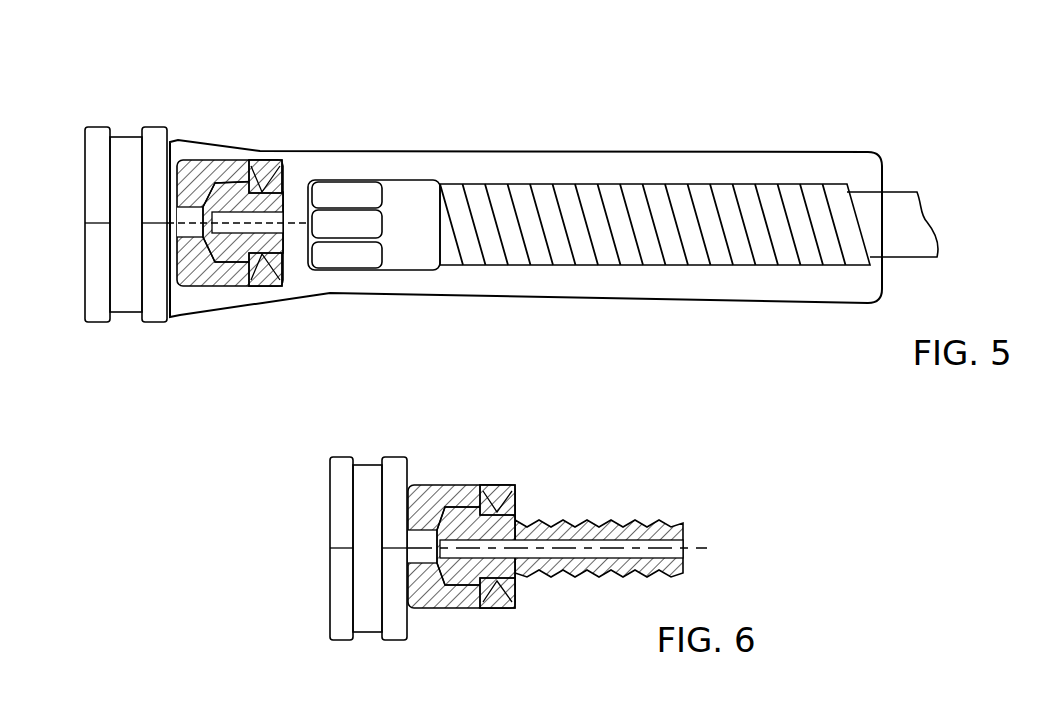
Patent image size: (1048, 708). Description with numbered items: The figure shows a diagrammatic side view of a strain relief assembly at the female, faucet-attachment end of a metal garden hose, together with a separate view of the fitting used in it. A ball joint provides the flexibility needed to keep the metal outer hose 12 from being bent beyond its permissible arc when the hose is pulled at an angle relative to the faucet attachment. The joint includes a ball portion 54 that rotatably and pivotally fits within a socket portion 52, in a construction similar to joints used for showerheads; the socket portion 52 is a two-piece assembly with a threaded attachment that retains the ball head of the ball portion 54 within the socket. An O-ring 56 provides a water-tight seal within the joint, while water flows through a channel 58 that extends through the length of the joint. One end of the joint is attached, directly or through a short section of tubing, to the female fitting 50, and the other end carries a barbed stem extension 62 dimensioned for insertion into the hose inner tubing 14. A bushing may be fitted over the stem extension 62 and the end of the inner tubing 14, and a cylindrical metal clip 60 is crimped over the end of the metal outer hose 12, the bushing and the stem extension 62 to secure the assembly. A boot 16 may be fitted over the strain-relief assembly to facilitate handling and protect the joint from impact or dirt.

In FIG. 5, the metal outer hose 12 is at (653, 197).
In FIG. 5, the hose inner tubing 14 is at (897, 208).
In FIG. 5, the boot 16 is at (800, 153).
In FIG. 5, the female fitting 50 is at (100, 140).
In FIG. 6, the female fitting 50 is at (347, 517).
In FIG. 5, the socket portion 52 is at (191, 182).
In FIG. 6, the socket portion 52 is at (427, 515).
In FIG. 5, the ball portion 54 is at (240, 193).
In FIG. 6, the ball portion 54 is at (457, 520).
In FIG. 5, the O-ring 56 is at (258, 178).
In FIG. 6, the O-ring 56 is at (490, 505).
In FIG. 5, the channel 58 is at (282, 220).
In FIG. 6, the channel 58 is at (505, 548).
In FIG. 5, the cylindrical metal clip 60 is at (395, 187).
In FIG. 6, the stem extension 62 is at (653, 527).